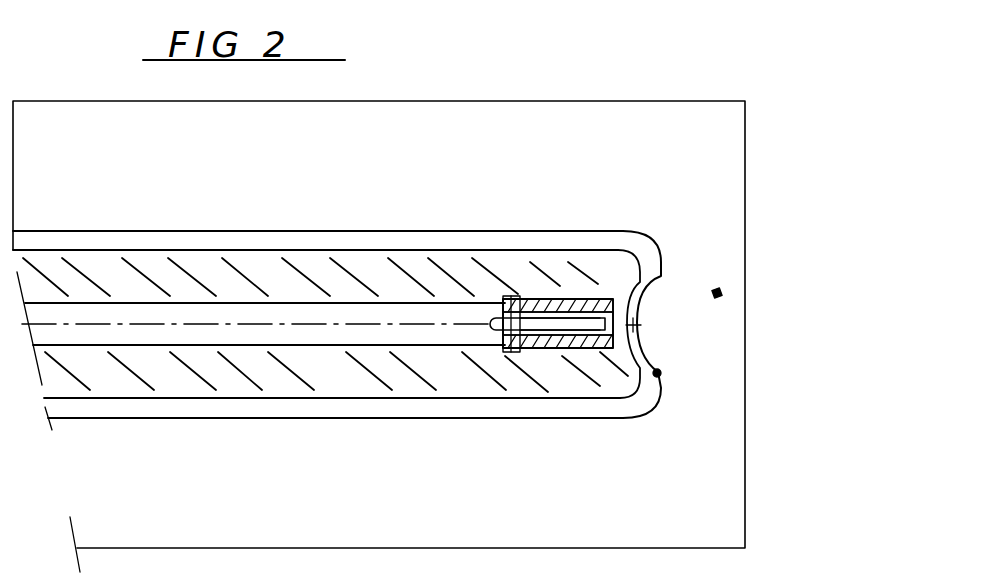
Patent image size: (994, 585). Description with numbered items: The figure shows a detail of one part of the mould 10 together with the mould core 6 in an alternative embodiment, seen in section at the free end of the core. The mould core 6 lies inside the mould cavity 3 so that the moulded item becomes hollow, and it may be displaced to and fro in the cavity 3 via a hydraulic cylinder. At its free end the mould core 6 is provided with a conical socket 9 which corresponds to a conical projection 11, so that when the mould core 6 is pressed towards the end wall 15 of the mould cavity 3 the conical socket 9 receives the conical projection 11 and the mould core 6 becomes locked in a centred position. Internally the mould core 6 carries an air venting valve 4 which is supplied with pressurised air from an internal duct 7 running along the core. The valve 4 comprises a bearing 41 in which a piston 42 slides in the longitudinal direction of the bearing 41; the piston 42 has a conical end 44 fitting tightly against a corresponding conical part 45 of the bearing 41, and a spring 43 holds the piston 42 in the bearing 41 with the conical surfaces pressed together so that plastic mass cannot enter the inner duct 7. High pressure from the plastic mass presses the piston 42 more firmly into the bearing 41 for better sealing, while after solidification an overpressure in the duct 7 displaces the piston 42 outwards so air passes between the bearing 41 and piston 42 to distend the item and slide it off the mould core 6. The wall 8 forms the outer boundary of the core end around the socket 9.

The mould cavity 3 is at (154, 409).
The air venting valve 4 is at (671, 327).
The mould core 6 is at (228, 370).
The internal duct 7 is at (289, 334).
The end cap outer wall 8 is at (568, 285).
The conical socket 9 is at (630, 280).
The mould 10 is at (717, 293).
The conical projection 11 is at (657, 373).
The end wall 15 is at (681, 322).
The bearing 41 is at (532, 345).
The piston 42 is at (545, 341).
The spring 43 is at (513, 315).
The conical end 44 is at (606, 323).
The conical part 45 is at (598, 308).